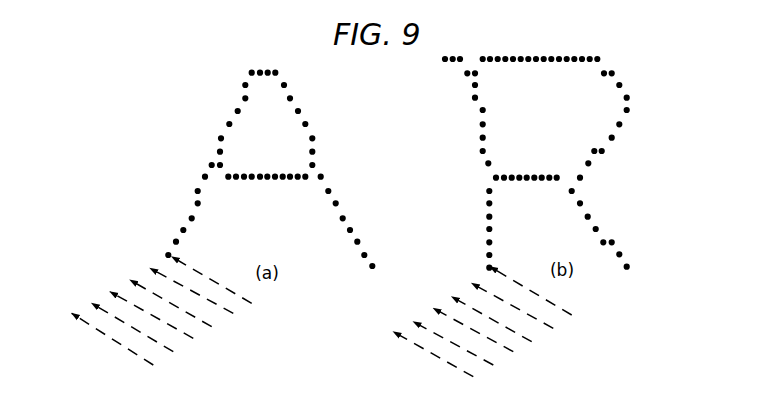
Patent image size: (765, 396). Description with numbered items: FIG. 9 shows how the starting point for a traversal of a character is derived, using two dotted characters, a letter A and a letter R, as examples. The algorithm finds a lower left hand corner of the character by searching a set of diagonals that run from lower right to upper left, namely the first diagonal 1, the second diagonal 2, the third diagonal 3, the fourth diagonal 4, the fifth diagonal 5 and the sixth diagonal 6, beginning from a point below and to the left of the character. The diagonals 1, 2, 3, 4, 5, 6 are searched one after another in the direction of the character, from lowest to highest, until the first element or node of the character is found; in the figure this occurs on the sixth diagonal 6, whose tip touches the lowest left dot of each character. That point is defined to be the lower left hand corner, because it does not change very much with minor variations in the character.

The first diagonal 1 is at (278, 350).
The second diagonal 2 is at (299, 339).
The third diagonal 3 is at (317, 328).
The fourth diagonal 4 is at (336, 317).
The fifth diagonal 5 is at (358, 305).
The sixth diagonal 6 is at (378, 292).